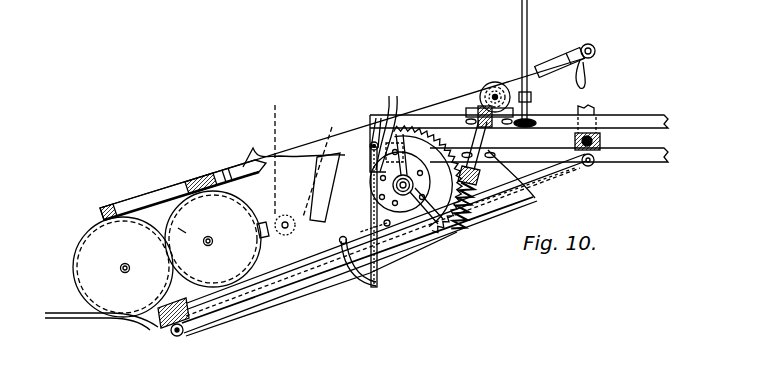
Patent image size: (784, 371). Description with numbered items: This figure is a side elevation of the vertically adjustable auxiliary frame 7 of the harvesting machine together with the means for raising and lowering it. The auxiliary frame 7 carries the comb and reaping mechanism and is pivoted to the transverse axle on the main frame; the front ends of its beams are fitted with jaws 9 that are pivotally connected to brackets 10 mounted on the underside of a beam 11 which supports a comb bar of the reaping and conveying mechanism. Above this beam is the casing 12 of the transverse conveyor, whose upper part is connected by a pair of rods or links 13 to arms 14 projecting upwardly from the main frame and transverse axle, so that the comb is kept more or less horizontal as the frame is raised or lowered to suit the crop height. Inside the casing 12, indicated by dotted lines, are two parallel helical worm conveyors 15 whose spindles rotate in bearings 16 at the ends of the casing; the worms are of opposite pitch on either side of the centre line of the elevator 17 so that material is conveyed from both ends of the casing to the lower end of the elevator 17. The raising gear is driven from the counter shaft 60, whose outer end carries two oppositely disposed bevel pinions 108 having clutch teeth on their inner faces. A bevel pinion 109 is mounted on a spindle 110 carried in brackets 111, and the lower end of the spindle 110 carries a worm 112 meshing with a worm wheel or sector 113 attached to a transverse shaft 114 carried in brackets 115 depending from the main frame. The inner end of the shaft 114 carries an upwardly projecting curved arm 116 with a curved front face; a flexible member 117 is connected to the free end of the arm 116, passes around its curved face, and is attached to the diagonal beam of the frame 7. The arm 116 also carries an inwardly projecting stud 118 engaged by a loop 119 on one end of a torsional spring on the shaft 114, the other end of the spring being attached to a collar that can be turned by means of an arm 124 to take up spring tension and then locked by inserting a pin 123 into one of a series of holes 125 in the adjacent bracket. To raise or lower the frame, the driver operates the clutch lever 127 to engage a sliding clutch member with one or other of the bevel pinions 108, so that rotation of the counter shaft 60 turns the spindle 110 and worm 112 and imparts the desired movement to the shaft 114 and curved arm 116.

The auxiliary frame 7 is at (305, 262).
The jaws 9 is at (183, 335).
The brackets 10 is at (168, 333).
The beam 11 is at (152, 329).
The casing 12 is at (172, 204).
The rods or links 13 is at (238, 170).
The arms 14 is at (596, 108).
The helical worm conveyors 15 is at (180, 228).
The bearings 16 is at (122, 263).
The elevator 17 is at (294, 171).
The counter shaft 60 is at (496, 82).
The bevel pinions 108 is at (492, 82).
The bevel pinion 109 is at (478, 105).
The spindle 110 is at (490, 140).
The brackets 111 is at (532, 194).
The worm 112 is at (461, 231).
The worm wheel or sector 113 is at (438, 233).
The transverse shaft 114 is at (397, 96).
The brackets 115 is at (368, 162).
The curved arm 116 is at (389, 110).
The flexible member 117 is at (371, 201).
The stud 118 is at (405, 197).
The loop 119 is at (394, 248).
The pin 123 is at (424, 178).
The arm 124 is at (372, 221).
The holes 125 is at (370, 178).
The lever 127 is at (527, 48).